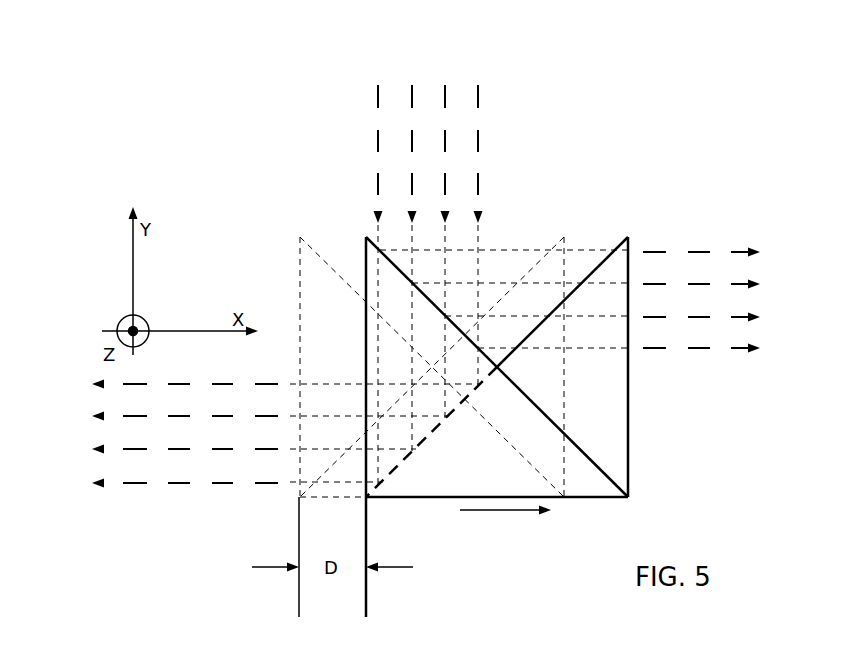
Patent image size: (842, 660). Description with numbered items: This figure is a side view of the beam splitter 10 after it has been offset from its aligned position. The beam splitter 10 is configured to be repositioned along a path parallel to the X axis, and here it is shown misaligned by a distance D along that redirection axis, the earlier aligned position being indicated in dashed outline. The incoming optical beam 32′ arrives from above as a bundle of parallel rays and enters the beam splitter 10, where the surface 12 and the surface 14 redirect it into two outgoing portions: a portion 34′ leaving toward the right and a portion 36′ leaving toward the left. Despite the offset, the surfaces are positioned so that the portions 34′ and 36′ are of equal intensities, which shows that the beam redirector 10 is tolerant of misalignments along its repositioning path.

The beam splitter 10 is at (612, 500).
The surface 12 is at (548, 415).
The surface 14 is at (608, 252).
The optical beam 32′ is at (478, 100).
The portion of optical beam 34′ is at (755, 268).
The portion of optical beam 36′ is at (90, 408).